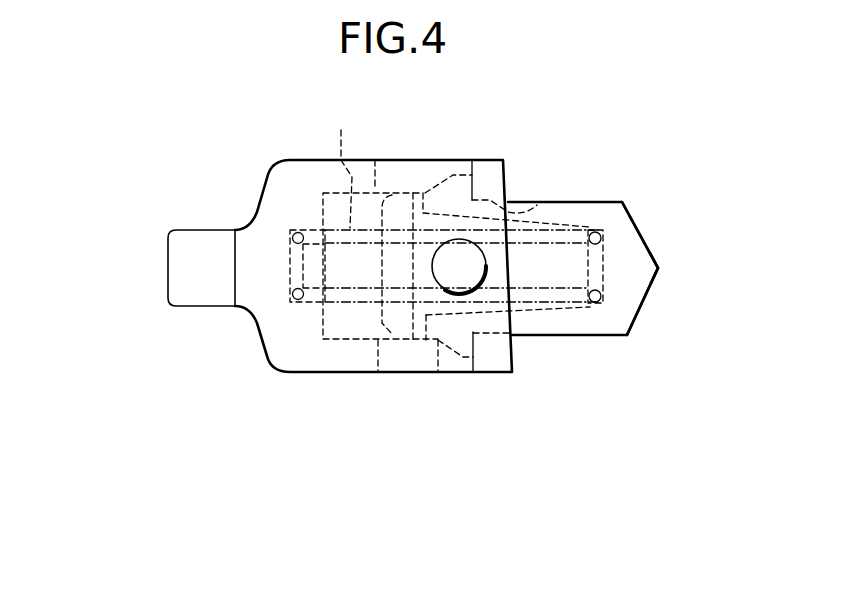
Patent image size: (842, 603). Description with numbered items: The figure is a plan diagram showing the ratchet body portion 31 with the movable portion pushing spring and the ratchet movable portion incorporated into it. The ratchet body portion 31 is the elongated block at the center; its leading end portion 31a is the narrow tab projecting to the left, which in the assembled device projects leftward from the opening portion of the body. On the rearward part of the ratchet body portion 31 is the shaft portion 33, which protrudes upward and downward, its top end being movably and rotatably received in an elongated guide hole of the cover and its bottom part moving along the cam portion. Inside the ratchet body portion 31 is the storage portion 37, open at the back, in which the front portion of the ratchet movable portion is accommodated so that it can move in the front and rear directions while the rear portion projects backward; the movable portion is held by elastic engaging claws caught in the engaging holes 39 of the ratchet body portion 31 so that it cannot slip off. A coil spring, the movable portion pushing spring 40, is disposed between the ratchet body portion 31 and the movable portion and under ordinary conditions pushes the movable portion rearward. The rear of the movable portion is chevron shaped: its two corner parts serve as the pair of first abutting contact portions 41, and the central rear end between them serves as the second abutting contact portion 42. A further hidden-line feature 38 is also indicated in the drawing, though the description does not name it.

The ratchet body portion 31 is at (313, 160).
The leading end portion 31a is at (168, 268).
The shaft portion 33 is at (593, 202).
The storage portion 37 is at (540, 202).
The slider block 38 is at (440, 372).
The engaging holes 39 is at (458, 372).
The movable portion pushing spring 40 is at (343, 124).
The first abutting contact portions 41 is at (622, 202).
The second abutting contact portion 42 is at (658, 268).